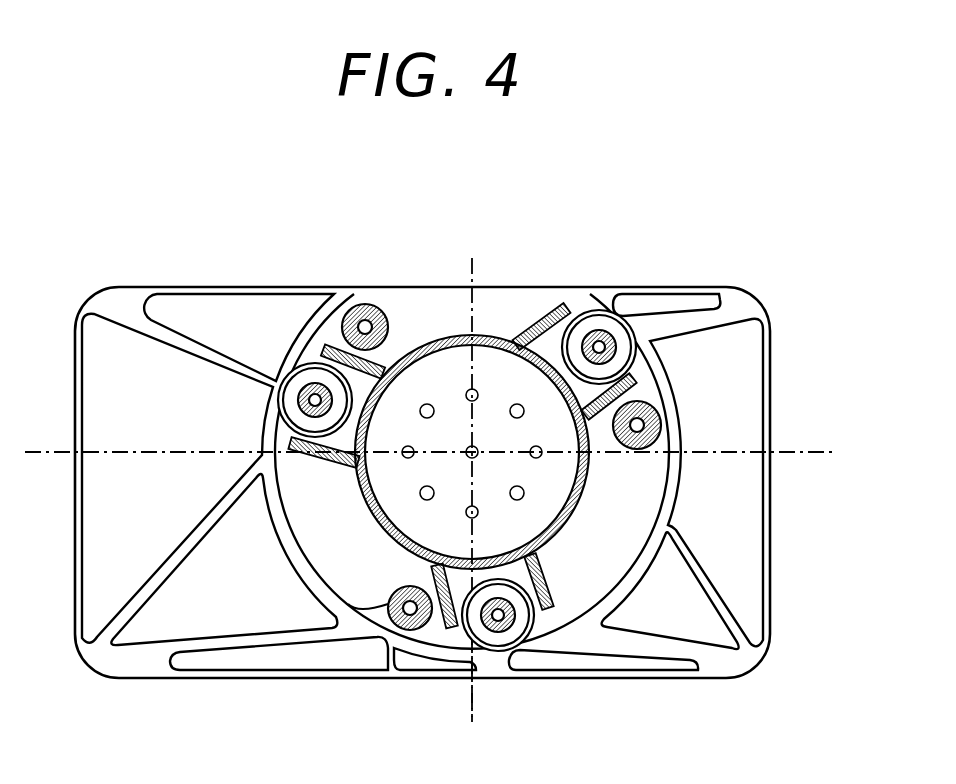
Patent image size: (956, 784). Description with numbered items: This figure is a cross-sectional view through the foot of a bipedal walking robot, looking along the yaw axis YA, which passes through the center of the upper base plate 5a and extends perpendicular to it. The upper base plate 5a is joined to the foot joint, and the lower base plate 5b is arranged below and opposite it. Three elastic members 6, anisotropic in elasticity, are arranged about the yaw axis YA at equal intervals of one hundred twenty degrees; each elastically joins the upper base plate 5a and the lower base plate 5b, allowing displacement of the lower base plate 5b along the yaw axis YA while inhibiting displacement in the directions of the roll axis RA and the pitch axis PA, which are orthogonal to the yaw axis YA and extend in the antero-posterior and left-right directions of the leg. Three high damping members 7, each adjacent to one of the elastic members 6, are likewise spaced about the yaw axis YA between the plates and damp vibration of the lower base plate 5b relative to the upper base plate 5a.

The upper base plate 5a is at (583, 507).
The lower base plate 5b is at (771, 598).
The elastic members 6 is at (285, 371).
The high damping members 7 is at (364, 304).
The yaw axis YA is at (474, 448).
The roll axis RA is at (793, 452).
The pitch axis PA is at (473, 688).